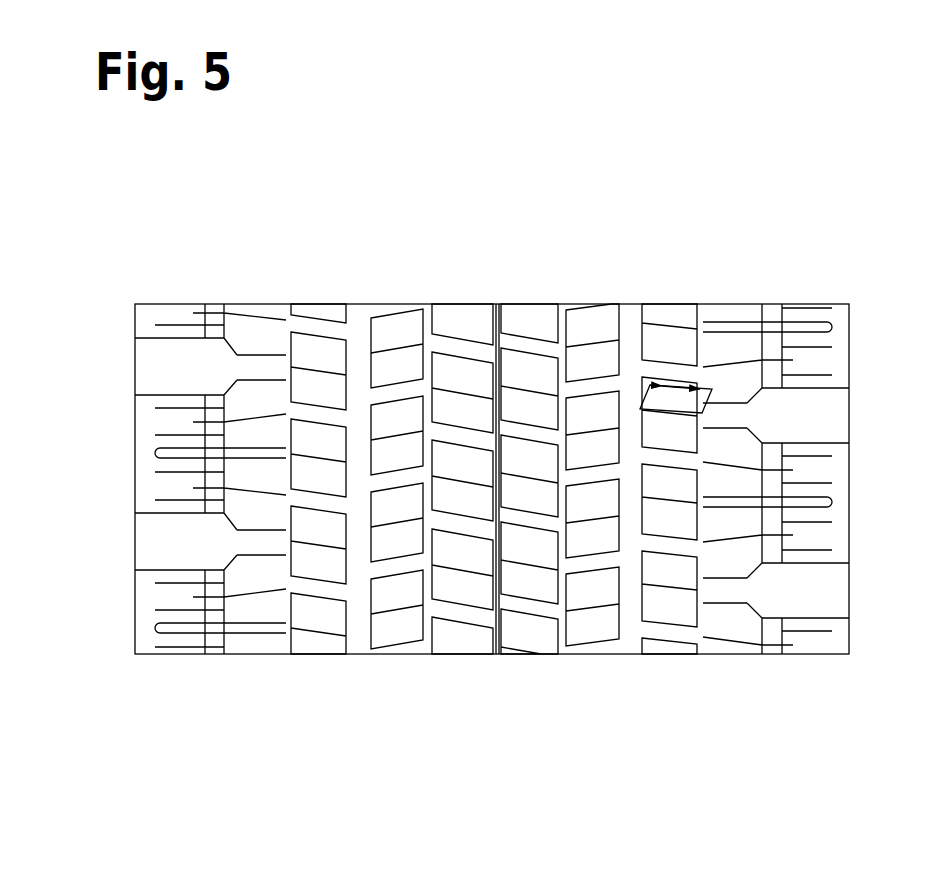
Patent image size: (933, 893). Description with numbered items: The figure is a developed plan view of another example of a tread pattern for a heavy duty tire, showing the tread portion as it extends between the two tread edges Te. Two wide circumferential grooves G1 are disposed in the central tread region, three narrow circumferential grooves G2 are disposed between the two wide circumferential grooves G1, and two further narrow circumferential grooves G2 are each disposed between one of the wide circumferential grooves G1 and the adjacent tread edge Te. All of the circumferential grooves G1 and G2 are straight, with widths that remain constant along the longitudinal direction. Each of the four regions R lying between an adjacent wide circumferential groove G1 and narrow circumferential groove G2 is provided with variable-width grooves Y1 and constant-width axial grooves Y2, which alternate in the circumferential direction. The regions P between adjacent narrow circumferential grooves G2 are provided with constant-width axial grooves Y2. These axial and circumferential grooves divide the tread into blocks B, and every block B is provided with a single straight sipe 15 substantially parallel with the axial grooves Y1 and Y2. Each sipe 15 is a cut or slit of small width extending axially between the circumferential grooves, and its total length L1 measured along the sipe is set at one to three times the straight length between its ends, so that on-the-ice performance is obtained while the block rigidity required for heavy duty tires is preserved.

The region R is at (317, 286).
The block B is at (305, 348).
The constant-width axial groove Y2 is at (450, 343).
The variable-width groove Y1 is at (320, 497).
The total length of sipe L1 is at (678, 387).
The sipe 15 is at (670, 412).
The tread edge Te is at (205, 636).
The narrow circumferential groove G2 is at (290, 655).
The wide circumferential groove G1 is at (358, 655).
The region P is at (468, 658).